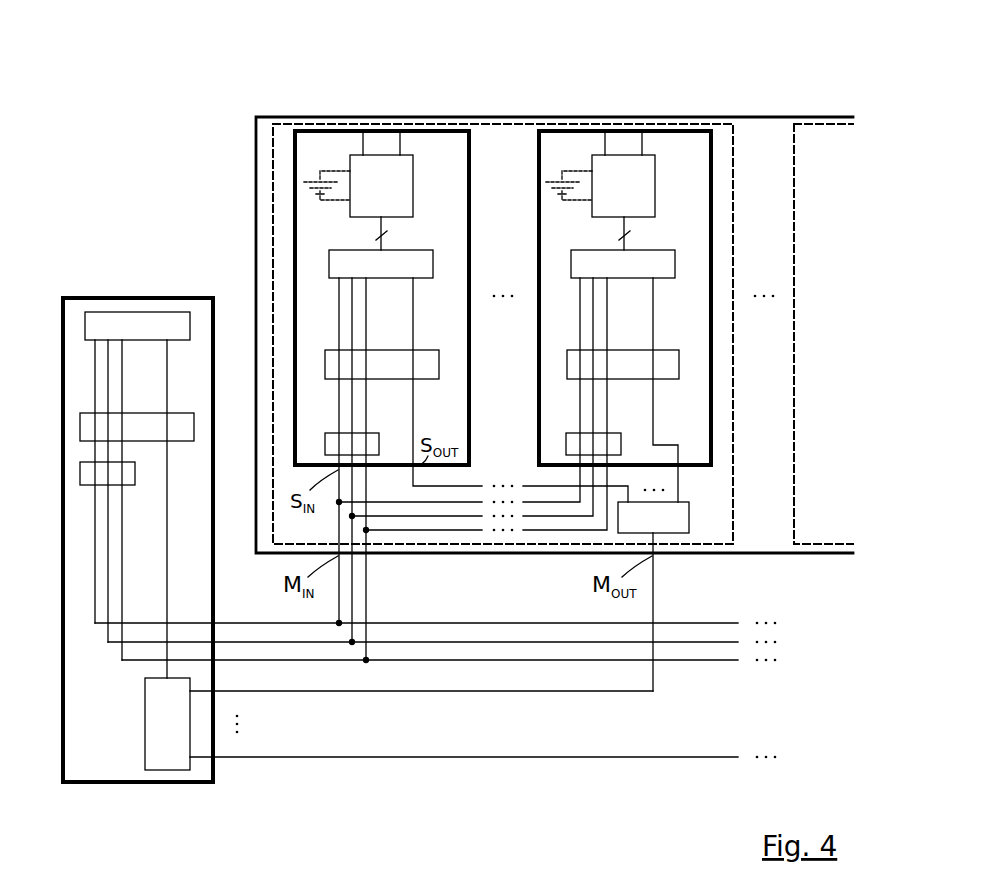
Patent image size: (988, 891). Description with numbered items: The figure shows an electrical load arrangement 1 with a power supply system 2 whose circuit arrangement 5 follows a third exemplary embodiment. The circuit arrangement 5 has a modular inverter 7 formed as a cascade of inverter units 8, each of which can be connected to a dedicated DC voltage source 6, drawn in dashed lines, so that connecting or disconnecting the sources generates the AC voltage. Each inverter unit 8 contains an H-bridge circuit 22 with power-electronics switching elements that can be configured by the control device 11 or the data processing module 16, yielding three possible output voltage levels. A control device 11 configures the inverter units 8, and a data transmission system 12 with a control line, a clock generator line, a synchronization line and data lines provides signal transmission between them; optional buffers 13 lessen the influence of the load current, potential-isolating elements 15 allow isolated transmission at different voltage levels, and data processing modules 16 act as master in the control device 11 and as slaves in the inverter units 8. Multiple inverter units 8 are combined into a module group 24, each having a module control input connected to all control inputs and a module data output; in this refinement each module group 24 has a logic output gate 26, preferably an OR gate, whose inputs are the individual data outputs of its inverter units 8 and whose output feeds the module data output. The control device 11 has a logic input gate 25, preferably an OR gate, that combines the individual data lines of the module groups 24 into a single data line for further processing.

The electrical load arrangement 1 is at (95, 67).
The power supply system 2 is at (178, 68).
The circuit arrangement 5 is at (246, 92).
The DC voltage source 6 is at (304, 167).
The modular inverter 7 is at (757, 117).
The inverter unit 8 is at (471, 186).
The control device 11 is at (76, 298).
The data transmission system 12 is at (845, 612).
The buffer 13 is at (128, 487).
The potential-isolating element 15 is at (130, 413).
The data processing module 16 is at (138, 308).
The H-bridge circuit 22 is at (502, 190).
The module group 24 is at (734, 185).
The logic input gate 25 is at (145, 734).
The logic output gate 26 is at (689, 516).